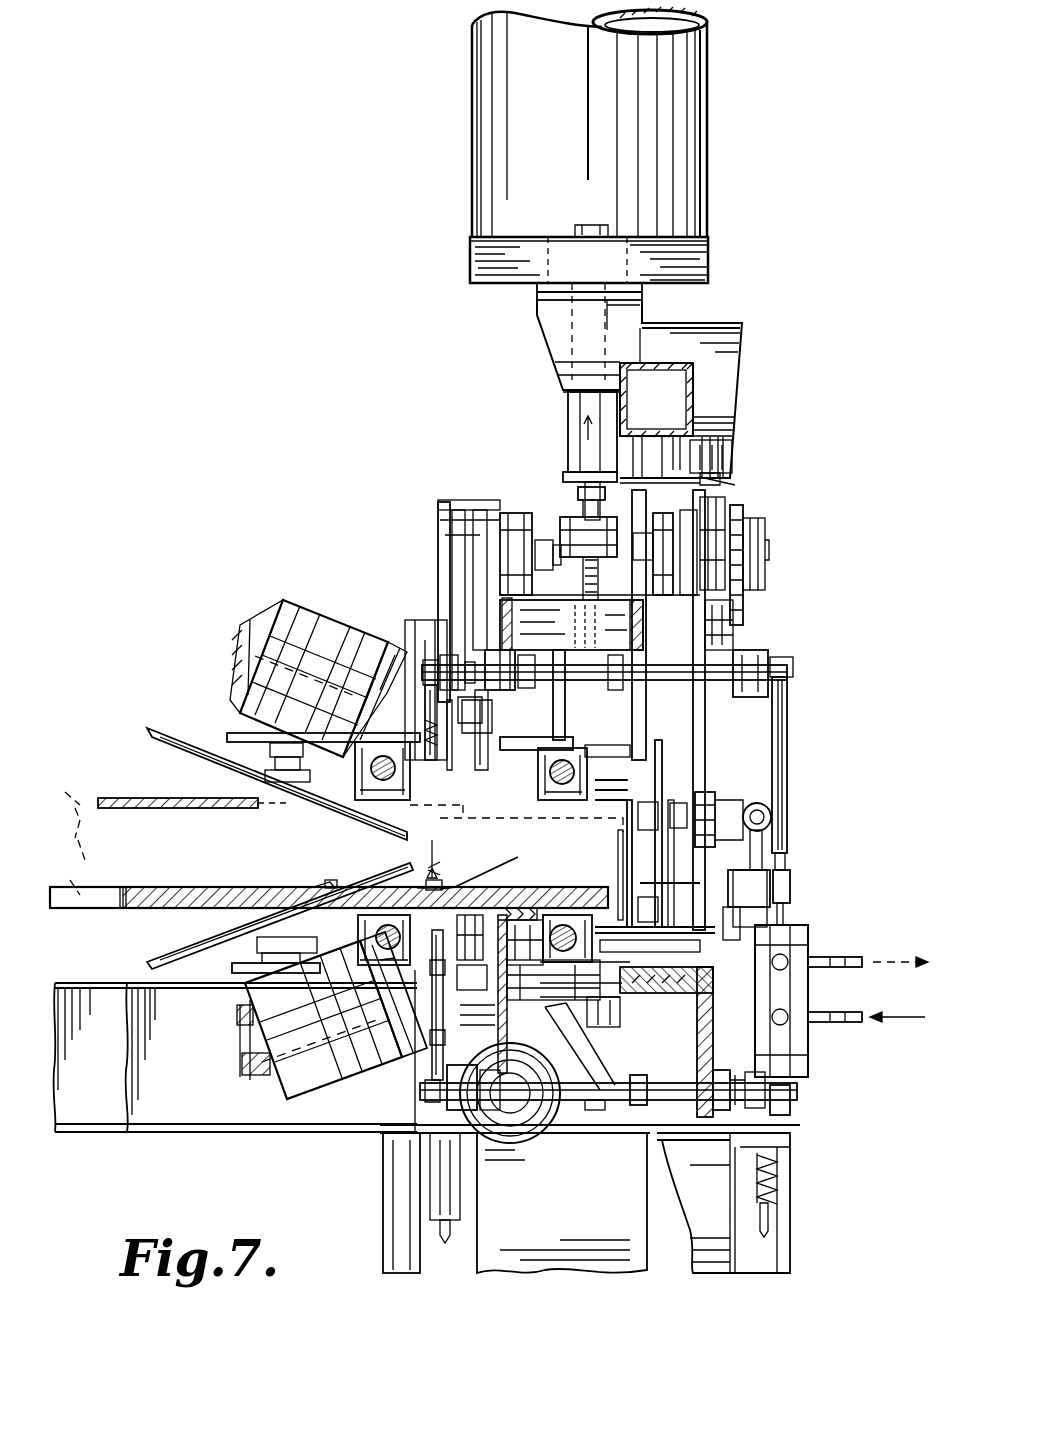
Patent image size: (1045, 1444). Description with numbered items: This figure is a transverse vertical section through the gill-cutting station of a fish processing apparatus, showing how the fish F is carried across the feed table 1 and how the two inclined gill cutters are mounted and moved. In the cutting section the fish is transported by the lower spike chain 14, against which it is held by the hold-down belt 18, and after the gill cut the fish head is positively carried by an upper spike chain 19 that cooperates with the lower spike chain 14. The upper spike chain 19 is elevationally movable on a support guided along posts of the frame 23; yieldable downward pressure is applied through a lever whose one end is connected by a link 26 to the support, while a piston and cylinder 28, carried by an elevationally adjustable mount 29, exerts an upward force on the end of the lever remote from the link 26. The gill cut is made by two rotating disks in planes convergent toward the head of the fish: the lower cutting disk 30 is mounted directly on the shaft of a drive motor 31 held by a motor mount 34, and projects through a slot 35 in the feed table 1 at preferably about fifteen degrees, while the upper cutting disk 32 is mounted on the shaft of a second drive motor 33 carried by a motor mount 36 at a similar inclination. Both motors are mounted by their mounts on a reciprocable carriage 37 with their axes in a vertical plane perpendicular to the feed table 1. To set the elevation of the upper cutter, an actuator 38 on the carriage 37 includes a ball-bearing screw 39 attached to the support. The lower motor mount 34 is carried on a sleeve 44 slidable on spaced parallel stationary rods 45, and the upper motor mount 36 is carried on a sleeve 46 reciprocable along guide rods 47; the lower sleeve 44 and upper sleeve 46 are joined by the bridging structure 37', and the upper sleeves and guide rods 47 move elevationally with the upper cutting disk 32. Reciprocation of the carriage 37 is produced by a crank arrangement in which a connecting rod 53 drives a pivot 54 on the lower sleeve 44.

The feed table 1 is at (136, 890).
The lower spike chain 14 is at (420, 863).
The hold-down belt 18 is at (132, 798).
The upper spike chain 19 is at (450, 825).
The frame 23 is at (455, 540).
The link 26 is at (793, 752).
The piston and cylinder 28 is at (808, 952).
The elevationally adjustable mount 29 is at (790, 1105).
The lower cutting disk 30 is at (158, 954).
The drive motor 31 is at (305, 1078).
The upper cutting disk 32 is at (172, 733).
The second drive motor 33 is at (290, 602).
The motor mount 34 is at (407, 1060).
The slot 35 is at (328, 888).
The motor mount 36 is at (400, 662).
The carriage 37 is at (721, 685).
The bridging structure 37' is at (775, 854).
The actuator 38 is at (498, 133).
The ball-bearing screw 39 is at (575, 500).
The sleeve 44 is at (525, 888).
The stationary rods 45 is at (572, 927).
The sleeve 46 is at (358, 785).
The guide rods 47 is at (370, 642).
The connecting rod 53 is at (595, 1105).
The pivot 54 is at (560, 1127).
The fish F is at (65, 831).